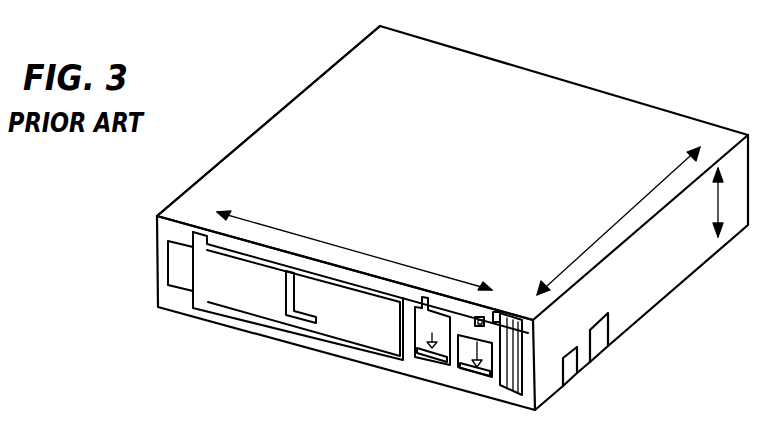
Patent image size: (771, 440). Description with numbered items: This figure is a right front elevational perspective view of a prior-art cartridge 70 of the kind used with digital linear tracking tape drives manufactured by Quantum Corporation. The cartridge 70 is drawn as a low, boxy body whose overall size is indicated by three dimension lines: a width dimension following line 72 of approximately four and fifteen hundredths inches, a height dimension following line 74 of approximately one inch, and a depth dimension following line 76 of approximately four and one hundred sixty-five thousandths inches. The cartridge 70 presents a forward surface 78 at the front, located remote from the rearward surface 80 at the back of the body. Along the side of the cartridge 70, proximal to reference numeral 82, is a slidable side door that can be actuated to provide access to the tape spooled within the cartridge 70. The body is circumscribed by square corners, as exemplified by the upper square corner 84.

The cartridge 70 is at (313, 82).
The width dimension line 72 is at (340, 245).
The height dimension line 74 is at (716, 197).
The depth dimension line 76 is at (645, 198).
The forward surface 78 is at (345, 350).
The rearward surface 80 is at (580, 84).
The slidable side door location 82 is at (241, 143).
The upper square corner 84 is at (621, 249).